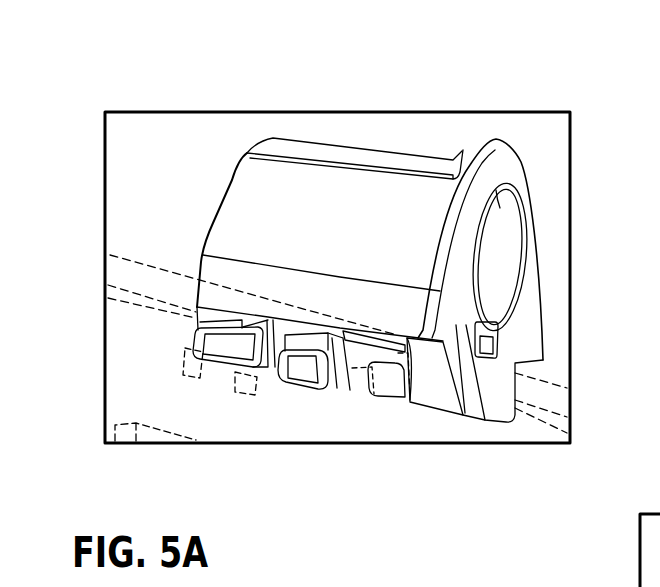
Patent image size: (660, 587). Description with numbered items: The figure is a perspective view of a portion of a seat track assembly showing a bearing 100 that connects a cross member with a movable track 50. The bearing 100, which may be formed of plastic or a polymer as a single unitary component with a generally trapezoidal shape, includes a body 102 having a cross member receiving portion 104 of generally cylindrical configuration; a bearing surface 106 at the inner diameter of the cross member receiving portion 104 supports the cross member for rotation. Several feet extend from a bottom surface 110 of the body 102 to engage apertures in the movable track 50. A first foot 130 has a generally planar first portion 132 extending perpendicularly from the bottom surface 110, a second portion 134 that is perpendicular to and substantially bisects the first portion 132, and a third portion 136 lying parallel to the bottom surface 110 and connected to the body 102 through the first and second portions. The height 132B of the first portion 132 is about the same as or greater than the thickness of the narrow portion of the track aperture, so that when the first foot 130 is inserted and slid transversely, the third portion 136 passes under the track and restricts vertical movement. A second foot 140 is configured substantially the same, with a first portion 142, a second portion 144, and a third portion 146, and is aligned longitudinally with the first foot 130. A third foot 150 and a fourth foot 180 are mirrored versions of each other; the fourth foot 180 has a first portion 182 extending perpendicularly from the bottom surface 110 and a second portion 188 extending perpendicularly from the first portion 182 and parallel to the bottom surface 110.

The movable track 50 is at (148, 267).
The bearing 100 is at (403, 148).
The body 102 is at (323, 146).
The cross member receiving portion 104 is at (513, 296).
The bearing surface 106 is at (493, 250).
The bottom surface 110 is at (270, 320).
The first foot 130 is at (347, 370).
The first portion 132 is at (298, 338).
The height 132B is at (312, 383).
The second portion 134 is at (341, 345).
The third portion 136 is at (290, 376).
The second foot 140 is at (274, 333).
The first portion 142 is at (231, 275).
The second portion 144 is at (194, 332).
The third portion 146 is at (225, 353).
The third foot 150 is at (500, 400).
The fourth foot 180 is at (456, 383).
The first portion 182 is at (423, 372).
The second portion 188 is at (383, 382).